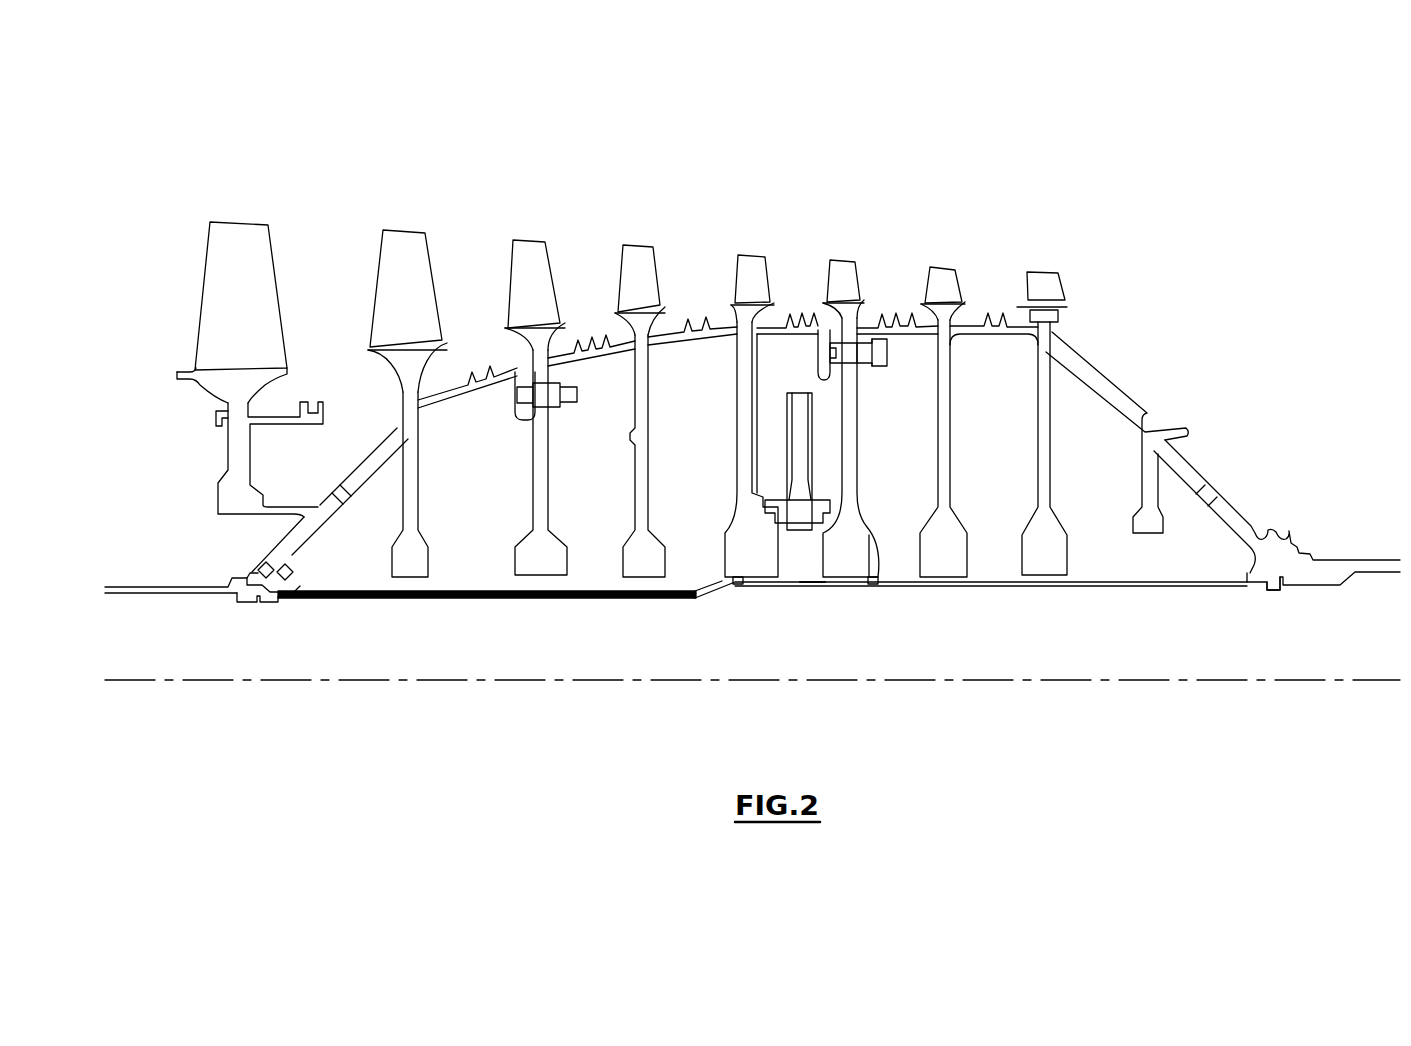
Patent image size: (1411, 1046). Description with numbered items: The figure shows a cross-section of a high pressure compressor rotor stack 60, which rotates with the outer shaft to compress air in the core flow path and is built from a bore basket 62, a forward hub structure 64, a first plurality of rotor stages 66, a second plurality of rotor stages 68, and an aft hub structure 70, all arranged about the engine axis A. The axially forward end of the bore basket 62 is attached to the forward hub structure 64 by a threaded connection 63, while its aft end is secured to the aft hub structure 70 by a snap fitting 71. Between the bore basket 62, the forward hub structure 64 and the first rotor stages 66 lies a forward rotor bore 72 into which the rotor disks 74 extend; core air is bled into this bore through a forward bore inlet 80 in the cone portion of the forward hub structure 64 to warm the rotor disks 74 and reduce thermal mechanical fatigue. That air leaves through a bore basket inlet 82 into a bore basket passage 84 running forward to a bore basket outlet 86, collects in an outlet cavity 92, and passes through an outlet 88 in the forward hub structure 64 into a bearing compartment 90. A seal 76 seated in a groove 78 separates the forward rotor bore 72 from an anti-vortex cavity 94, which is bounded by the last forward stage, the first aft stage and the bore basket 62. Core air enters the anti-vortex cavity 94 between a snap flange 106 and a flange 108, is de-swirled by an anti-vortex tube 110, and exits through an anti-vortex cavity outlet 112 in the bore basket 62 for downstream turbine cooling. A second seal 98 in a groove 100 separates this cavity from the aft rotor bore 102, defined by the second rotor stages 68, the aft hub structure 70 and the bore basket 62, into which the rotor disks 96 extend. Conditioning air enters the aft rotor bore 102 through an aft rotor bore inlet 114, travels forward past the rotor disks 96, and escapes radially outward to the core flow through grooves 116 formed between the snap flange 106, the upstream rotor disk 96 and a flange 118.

The high pressure compressor rotor stack 60 is at (1113, 192).
The bore basket 62 is at (728, 597).
The threaded connection 63 is at (260, 602).
The forward hub structure 64 is at (374, 445).
The first plurality of rotor stages 66 is at (333, 160).
The second plurality of rotor stages 68 is at (948, 195).
The aft hub structure 70 is at (1113, 397).
The snap fitting 71 is at (1258, 583).
The forward rotor bore 72 is at (488, 476).
The rotor disks 74 is at (415, 537).
The seal 76 is at (747, 580).
The groove 78 is at (740, 586).
The forward bore inlet 80 is at (322, 485).
The bore basket inlet 82 is at (682, 595).
The bore basket passage 84 is at (579, 594).
The bore basket outlet 86 is at (293, 590).
The outlet 88 is at (250, 567).
The bearing compartment 90 is at (170, 515).
The outlet cavity 92 is at (298, 570).
The anti-vortex cavity 94 is at (811, 388).
The rotor disks 96 is at (850, 500).
The seal 98 is at (867, 565).
The groove 100 is at (873, 583).
The aft rotor bore 102 is at (1014, 435).
The snap flange 106 is at (867, 330).
The flange 108 is at (817, 330).
The anti-vortex tube 110 is at (788, 432).
The anti-vortex cavity outlet 112 is at (813, 590).
The aft rotor bore inlet 114 is at (1217, 492).
The grooves 116 is at (867, 372).
The flange 118 is at (873, 330).
The engine axis A is at (877, 678).